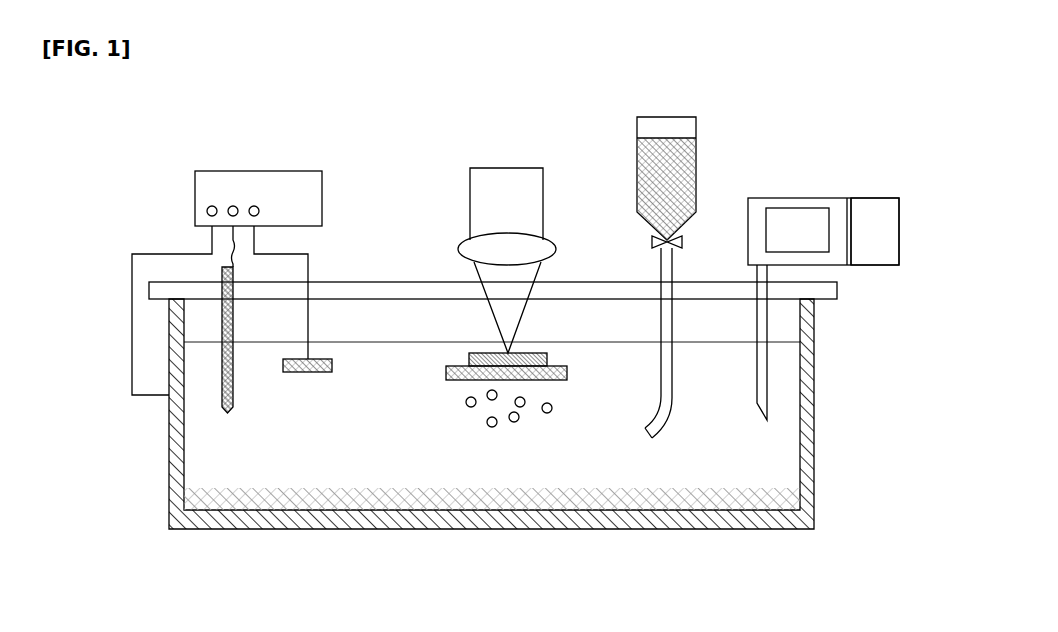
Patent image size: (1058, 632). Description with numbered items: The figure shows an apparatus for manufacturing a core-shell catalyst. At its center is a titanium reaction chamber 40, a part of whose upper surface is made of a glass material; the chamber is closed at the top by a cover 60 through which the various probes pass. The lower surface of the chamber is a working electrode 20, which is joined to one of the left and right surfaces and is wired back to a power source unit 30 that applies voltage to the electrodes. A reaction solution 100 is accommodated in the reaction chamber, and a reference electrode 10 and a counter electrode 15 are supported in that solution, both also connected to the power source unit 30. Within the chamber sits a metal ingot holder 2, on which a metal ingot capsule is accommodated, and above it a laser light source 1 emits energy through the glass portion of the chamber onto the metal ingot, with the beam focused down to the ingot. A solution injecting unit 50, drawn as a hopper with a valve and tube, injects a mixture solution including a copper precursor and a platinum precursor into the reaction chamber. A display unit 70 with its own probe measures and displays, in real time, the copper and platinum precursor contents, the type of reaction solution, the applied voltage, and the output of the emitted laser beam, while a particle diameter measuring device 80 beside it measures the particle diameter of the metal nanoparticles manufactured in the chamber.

The laser light source 1 is at (470, 190).
The metal ingot holder 2 is at (446, 373).
The reference electrode 10 is at (235, 405).
The counter electrode 15 is at (310, 265).
The working electrode 20 is at (130, 348).
The power source unit 30 is at (240, 171).
The titanium reaction chamber 40 is at (815, 410).
The solution injecting unit 50 is at (699, 148).
The cover 60 is at (838, 290).
The display unit 70 is at (802, 205).
The particle diameter measuring device 80 is at (883, 236).
The reaction solution 100 is at (780, 462).